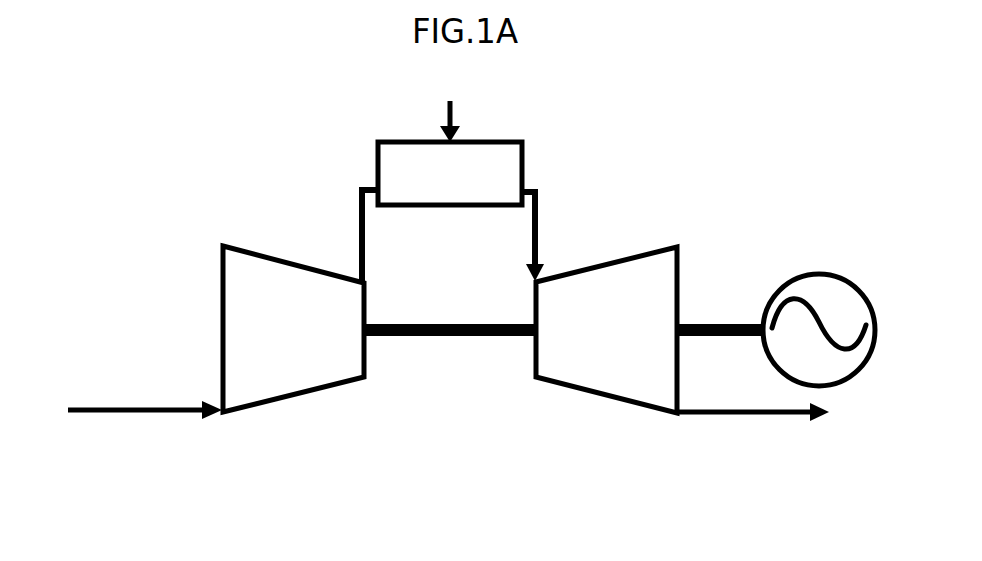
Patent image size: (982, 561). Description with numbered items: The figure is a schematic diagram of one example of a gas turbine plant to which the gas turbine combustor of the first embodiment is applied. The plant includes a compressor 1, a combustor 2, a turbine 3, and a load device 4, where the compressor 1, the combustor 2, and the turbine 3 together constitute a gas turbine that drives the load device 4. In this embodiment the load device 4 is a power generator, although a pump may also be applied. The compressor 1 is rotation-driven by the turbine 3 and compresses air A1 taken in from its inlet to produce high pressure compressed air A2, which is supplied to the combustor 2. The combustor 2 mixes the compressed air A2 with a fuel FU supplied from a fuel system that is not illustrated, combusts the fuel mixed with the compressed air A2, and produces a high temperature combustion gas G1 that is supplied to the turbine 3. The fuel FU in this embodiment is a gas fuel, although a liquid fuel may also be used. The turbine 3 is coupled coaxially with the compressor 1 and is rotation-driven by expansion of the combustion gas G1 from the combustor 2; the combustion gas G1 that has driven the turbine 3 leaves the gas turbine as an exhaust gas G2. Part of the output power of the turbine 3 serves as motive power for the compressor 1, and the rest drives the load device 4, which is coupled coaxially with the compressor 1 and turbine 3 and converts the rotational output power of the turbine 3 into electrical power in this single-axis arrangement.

The compressor 1 is at (293, 329).
The gas turbine combustor 2 is at (450, 173).
The turbine 3 is at (606, 330).
The load device 4 is at (820, 273).
The air A1 is at (126, 410).
The compressed air A2 is at (352, 237).
The combustion gas G1 is at (548, 236).
The exhaust gas G2 is at (773, 413).
The fuel FU is at (449, 107).